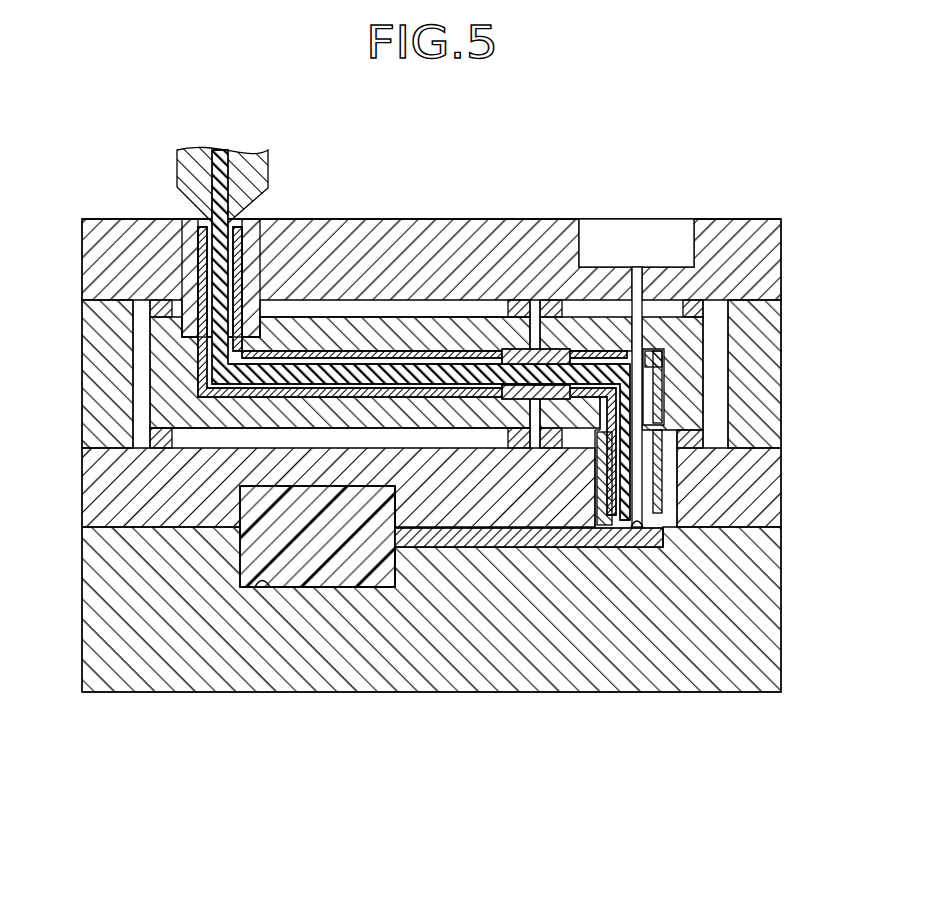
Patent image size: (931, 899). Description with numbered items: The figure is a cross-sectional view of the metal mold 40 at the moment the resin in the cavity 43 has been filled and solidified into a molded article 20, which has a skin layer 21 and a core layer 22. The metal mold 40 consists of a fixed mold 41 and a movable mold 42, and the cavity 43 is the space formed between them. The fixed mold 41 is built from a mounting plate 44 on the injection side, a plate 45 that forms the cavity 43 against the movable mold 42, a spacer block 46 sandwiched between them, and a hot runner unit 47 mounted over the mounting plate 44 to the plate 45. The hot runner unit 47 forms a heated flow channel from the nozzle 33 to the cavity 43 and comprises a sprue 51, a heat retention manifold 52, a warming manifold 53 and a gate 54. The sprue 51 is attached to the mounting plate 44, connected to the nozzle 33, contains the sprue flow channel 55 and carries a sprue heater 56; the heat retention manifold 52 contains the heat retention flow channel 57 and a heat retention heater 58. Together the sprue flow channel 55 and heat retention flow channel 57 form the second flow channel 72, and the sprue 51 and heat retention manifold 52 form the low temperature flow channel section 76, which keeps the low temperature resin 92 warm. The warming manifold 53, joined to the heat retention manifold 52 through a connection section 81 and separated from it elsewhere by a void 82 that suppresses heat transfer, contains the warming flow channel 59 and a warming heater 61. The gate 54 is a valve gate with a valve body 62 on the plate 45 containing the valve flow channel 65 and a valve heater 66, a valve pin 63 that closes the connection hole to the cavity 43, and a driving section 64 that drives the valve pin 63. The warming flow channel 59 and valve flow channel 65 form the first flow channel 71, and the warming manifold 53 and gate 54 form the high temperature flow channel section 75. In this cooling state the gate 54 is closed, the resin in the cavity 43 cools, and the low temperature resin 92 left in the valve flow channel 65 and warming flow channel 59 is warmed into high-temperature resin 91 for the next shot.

The molded article 20 is at (302, 748).
The skin layer 21 is at (362, 588).
The core layer 22 is at (325, 560).
The nozzle 33 is at (183, 170).
The metal mold 40 is at (739, 177).
The fixed mold 41 is at (752, 220).
The movable mold 42 is at (162, 680).
The cavity 43 is at (282, 590).
The mounting plate 44 is at (770, 248).
The plate 45 is at (120, 482).
The spacer block 46 is at (772, 320).
The hot runner unit 47 is at (183, 432).
The sprue 51 is at (254, 256).
The heat retention manifold 52 is at (383, 322).
The warming manifold 53 is at (705, 377).
The gate 54 is at (680, 465).
The sprue flow channel 55 is at (200, 280).
The sprue heater 56 is at (200, 246).
The heat retention flow channel 57 is at (205, 367).
The heat retention heater 58 is at (425, 335).
The warming flow channel 59 is at (588, 402).
The warming heater 61 is at (665, 361).
The valve body 62 is at (680, 492).
The valve pin 63 is at (666, 548).
The driving section 64 is at (650, 237).
The valve flow channel 65 is at (636, 529).
The valve heater 66 is at (678, 543).
The first flow channel 71 is at (612, 747).
The second flow channel 72 is at (46, 275).
The high temperature flow channel section 75 is at (830, 378).
The low temperature flow channel section 76 is at (345, 179).
The connection section 81 is at (503, 350).
The void 82 is at (533, 332).
The high-temperature resin 91 is at (585, 345).
The low temperature resin 92 is at (220, 176).